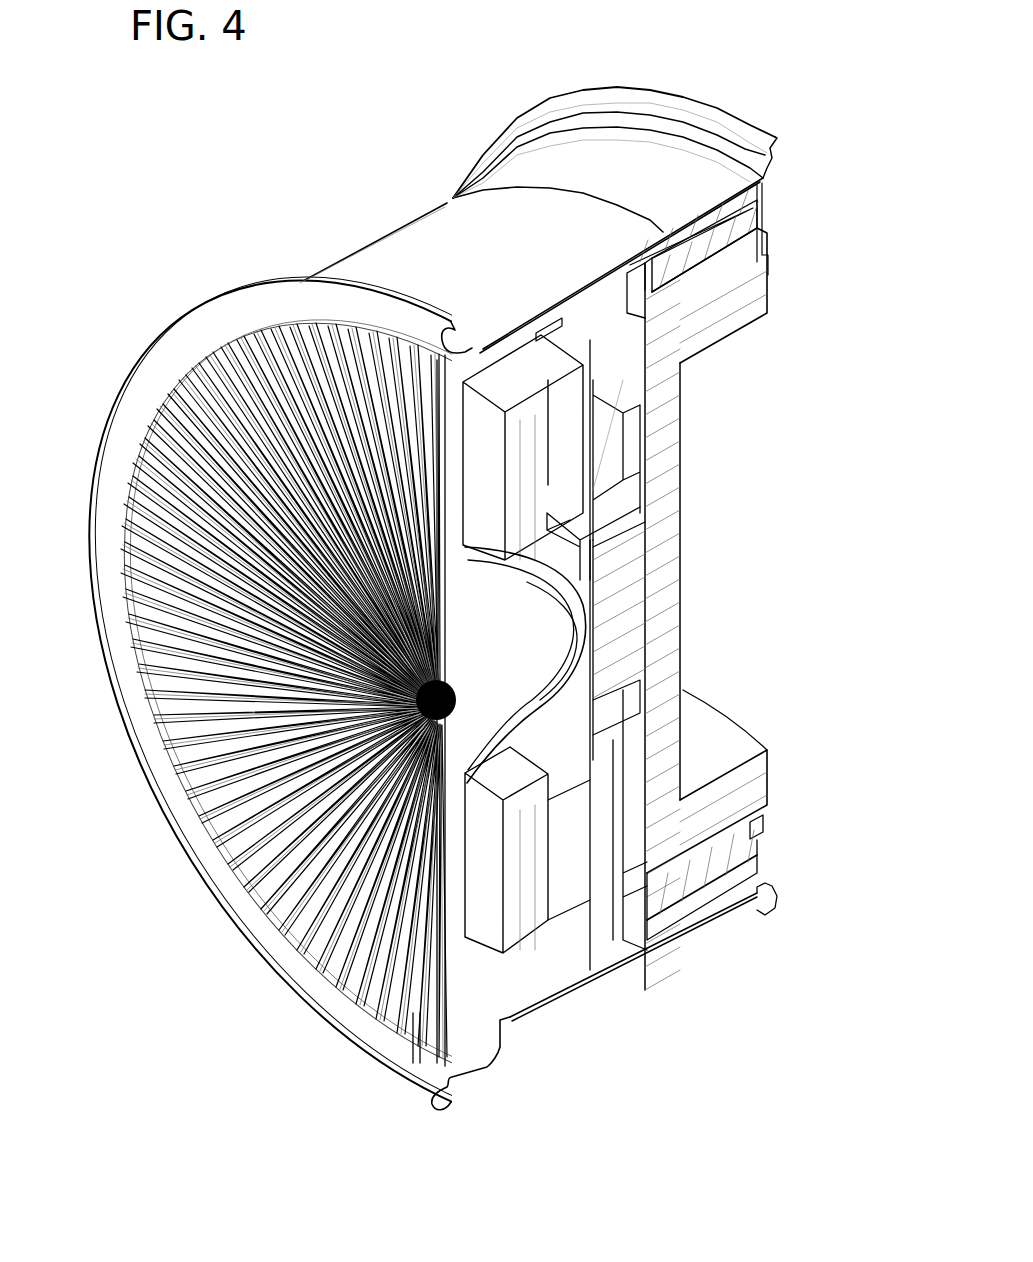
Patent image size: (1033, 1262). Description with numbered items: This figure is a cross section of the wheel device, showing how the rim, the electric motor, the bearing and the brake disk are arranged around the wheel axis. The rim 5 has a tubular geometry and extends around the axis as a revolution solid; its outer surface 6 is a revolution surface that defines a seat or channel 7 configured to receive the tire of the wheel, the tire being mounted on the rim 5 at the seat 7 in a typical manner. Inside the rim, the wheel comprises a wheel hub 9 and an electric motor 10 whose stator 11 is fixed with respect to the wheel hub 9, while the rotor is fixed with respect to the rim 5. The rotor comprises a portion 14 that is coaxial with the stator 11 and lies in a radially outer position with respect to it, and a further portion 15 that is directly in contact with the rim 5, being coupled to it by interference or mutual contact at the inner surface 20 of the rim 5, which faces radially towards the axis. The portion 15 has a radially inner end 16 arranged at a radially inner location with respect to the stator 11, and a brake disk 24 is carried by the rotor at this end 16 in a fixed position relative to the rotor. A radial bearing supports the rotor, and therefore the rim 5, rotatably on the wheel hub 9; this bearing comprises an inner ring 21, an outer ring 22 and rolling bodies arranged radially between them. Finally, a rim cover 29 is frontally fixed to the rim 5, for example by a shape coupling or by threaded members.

The rim 5 is at (413, 242).
The outer surface 6 is at (467, 235).
The seat or channel 7 is at (300, 278).
The wheel hub 9 is at (720, 320).
The electric motor 10 is at (772, 234).
The stator 11 is at (725, 838).
The portion of the rotor 14 is at (720, 900).
The portion of the rotor 15 is at (636, 960).
The radially inner end 16 is at (615, 458).
The inner surface 20 is at (547, 330).
The inner ring 21 is at (617, 527).
The outer ring 22 is at (625, 485).
The brake disk 24 is at (515, 935).
The rim cover 29 is at (187, 382).